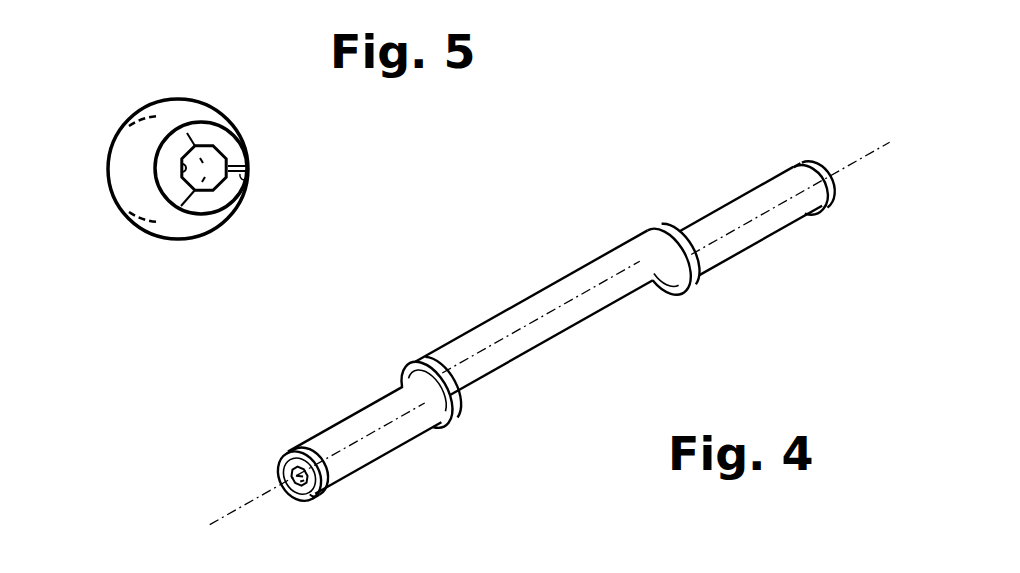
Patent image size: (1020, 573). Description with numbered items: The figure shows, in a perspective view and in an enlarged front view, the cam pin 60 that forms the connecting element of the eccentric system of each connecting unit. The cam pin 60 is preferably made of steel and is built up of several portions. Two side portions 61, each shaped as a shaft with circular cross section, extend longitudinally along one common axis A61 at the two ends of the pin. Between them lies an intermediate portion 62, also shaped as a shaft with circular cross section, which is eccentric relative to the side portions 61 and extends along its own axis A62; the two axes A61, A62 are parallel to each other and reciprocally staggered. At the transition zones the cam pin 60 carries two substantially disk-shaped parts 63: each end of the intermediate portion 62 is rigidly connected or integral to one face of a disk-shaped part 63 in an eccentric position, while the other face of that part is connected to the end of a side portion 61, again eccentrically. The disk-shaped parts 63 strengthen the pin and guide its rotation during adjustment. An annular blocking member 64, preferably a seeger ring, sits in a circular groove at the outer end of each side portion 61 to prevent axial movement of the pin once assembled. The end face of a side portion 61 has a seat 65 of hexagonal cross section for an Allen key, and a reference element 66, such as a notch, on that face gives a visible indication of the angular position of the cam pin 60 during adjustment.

In FIG. 5, the cam pin 60 is at (228, 90).
In FIG. 4, the cam pin 60 is at (579, 196).
In FIG. 5, the side portions 61 is at (235, 140).
In FIG. 4, the side portions 61 is at (370, 404).
In FIG. 5, the intermediate portion 62 is at (130, 186).
In FIG. 4, the intermediate portion 62 is at (522, 308).
In FIG. 5, the disk-shaped parts 63 is at (179, 104).
In FIG. 4, the disk-shaped parts 63 is at (402, 374).
In FIG. 4, the annular blocking member 64 is at (296, 452).
In FIG. 5, the seat 65 is at (181, 168).
In FIG. 4, the seat 65 is at (284, 472).
In FIG. 5, the reference element 66 is at (240, 176).
In FIG. 4, the reference element 66 is at (306, 498).
In FIG. 4, the axis of the side portions A61 is at (848, 170).
In FIG. 4, the axis of the intermediate portion A62 is at (576, 336).